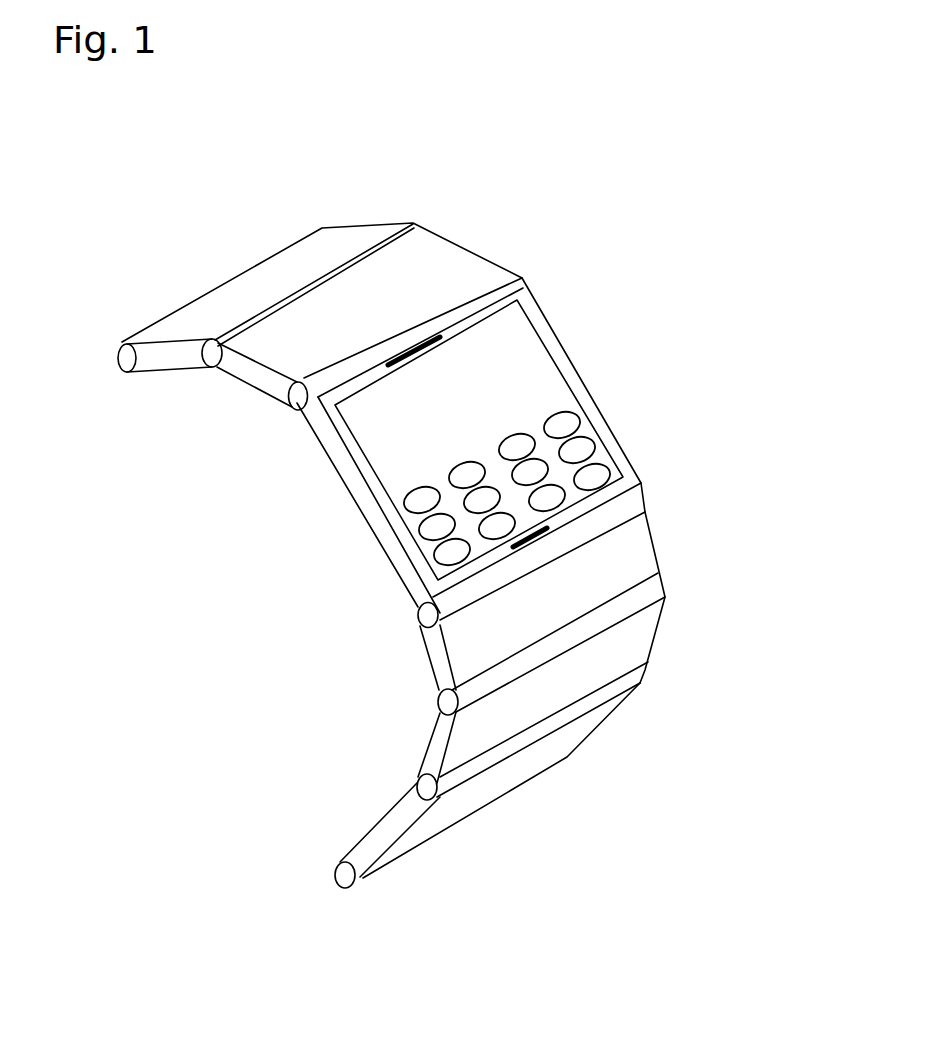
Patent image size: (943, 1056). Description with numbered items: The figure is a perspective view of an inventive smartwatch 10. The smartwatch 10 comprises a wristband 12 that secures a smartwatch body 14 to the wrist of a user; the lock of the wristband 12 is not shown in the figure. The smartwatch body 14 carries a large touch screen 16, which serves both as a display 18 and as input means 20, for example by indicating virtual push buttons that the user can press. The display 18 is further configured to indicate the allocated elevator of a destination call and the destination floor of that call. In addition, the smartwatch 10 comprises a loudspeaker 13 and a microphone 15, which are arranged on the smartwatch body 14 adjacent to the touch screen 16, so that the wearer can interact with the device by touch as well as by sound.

The smartwatch 10 is at (536, 181).
The wristband 12 is at (203, 332).
The loudspeaker 13 is at (425, 337).
The smartwatch body 14 is at (333, 508).
The microphone 15 is at (533, 540).
The touch screen 16 is at (532, 363).
The display 18 is at (395, 425).
The input means 20 is at (440, 523).